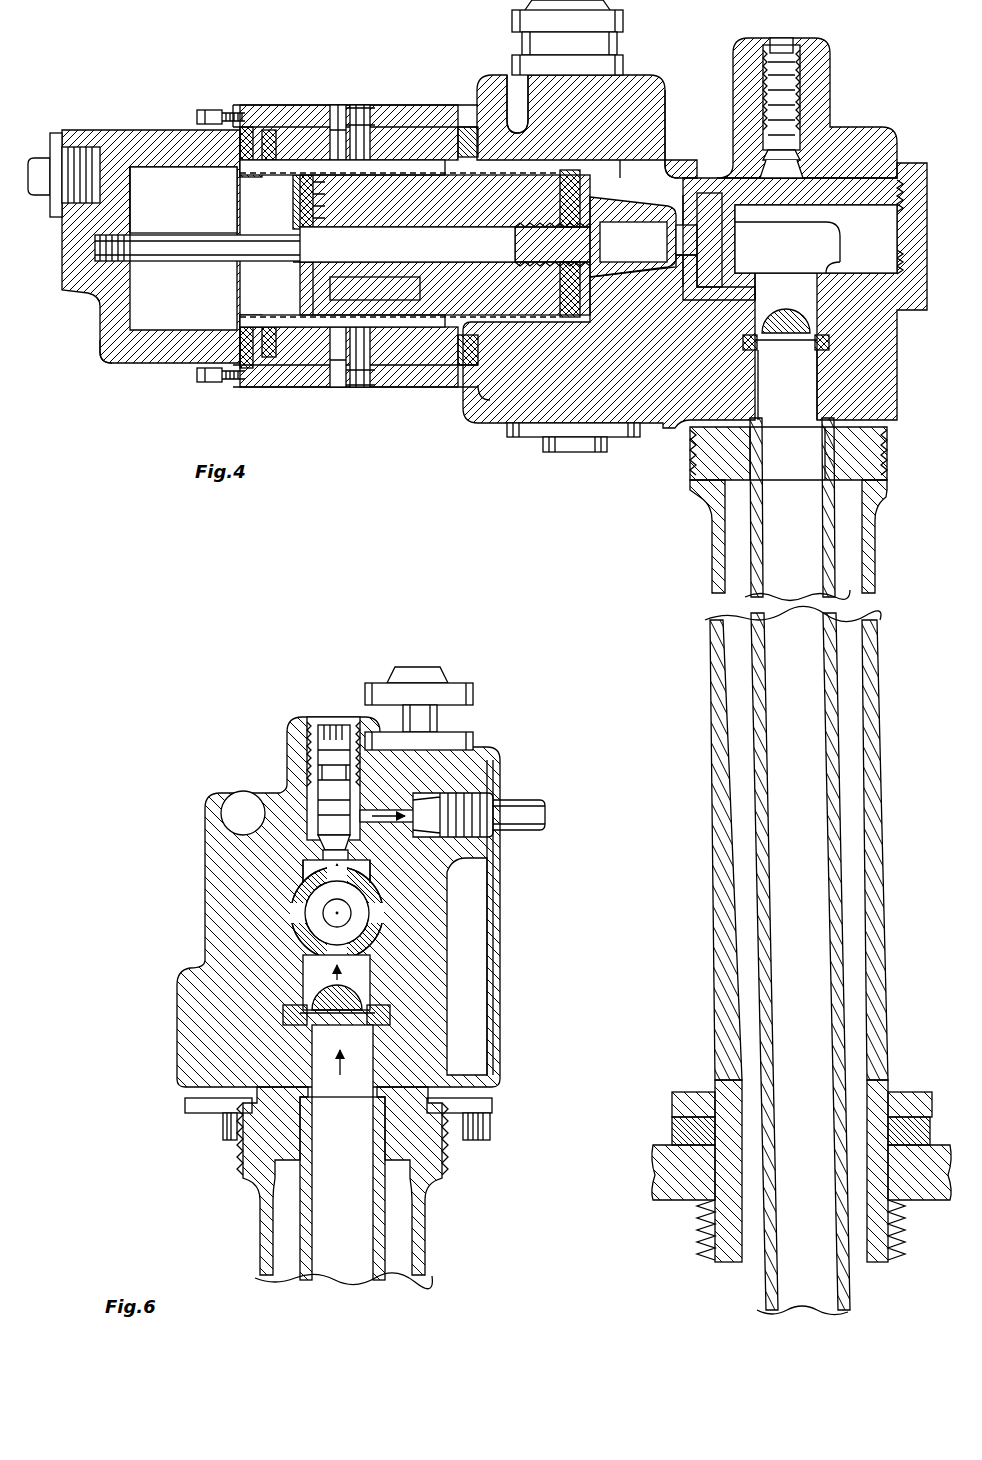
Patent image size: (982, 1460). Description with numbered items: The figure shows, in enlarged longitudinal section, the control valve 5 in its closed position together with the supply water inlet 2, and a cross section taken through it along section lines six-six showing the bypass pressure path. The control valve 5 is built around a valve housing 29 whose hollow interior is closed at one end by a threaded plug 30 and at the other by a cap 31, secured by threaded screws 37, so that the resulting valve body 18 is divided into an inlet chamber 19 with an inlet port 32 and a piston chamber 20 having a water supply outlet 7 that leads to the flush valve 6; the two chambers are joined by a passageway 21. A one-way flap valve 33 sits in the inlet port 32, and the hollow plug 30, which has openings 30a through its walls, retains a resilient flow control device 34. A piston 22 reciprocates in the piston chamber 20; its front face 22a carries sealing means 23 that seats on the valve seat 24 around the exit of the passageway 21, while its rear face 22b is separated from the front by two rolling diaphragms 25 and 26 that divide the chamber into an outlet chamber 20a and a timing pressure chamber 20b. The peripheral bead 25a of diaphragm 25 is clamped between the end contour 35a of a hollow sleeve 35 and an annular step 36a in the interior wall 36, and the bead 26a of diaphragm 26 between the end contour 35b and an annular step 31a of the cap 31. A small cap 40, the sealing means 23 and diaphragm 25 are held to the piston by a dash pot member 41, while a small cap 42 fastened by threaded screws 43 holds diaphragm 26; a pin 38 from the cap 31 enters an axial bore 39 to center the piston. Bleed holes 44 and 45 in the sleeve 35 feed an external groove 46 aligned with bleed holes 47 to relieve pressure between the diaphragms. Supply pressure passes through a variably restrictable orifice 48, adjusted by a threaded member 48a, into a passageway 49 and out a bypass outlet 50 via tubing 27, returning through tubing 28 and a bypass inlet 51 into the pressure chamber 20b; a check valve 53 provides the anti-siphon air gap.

In FIG. 4, the supply water inlet 2 is at (840, 850).
In FIG. 6, the supply water inlet 2 is at (415, 1248).
In FIG. 4, the control valve 5 is at (391, 72).
In FIG. 6, the control valve 5 is at (512, 930).
In FIG. 4, the flush valve 6 is at (783, 50).
In FIG. 4, the water supply outlet 7 is at (575, 468).
In FIG. 4, the valve body 18 is at (432, 104).
In FIG. 4, the inlet chamber 19 is at (816, 239).
In FIG. 6, the inlet chamber 19 is at (325, 925).
In FIG. 4, the piston chamber 20 is at (105, 310).
In FIG. 4, the outlet chamber 20a is at (595, 312).
In FIG. 4, the timing pressure chamber 20b is at (183, 200).
In FIG. 4, the passageway 21 is at (685, 200).
In FIG. 4, the piston 22 is at (415, 245).
In FIG. 4, the front face 22a is at (600, 246).
In FIG. 4, the rear face 22b is at (300, 272).
In FIG. 4, the sealing means 23 is at (600, 195).
In FIG. 4, the valve seat 24 is at (663, 148).
In FIG. 4, the rolling diaphragm 25 is at (570, 160).
In FIG. 4, the peripheral bead 25a is at (516, 128).
In FIG. 4, the rolling diaphragm 26 is at (292, 178).
In FIG. 4, the bead 26a is at (245, 165).
In FIG. 6, the tubing 27 is at (520, 812).
In FIG. 4, the tubing 28 is at (42, 158).
In FIG. 4, the valve housing 29 is at (252, 110).
In FIG. 4, the plug 30 is at (922, 195).
In FIG. 4, the openings 30a is at (838, 250).
In FIG. 6, the openings 30a is at (385, 920).
In FIG. 4, the cap 31 is at (128, 362).
In FIG. 4, the annular step 31a is at (218, 112).
In FIG. 4, the inlet port 32 is at (788, 433).
In FIG. 6, the inlet port 32 is at (342, 1061).
In FIG. 4, the one-way flap valve 33 is at (780, 312).
In FIG. 6, the one-way flap valve 33 is at (345, 990).
In FIG. 4, the flow control device 34 is at (700, 205).
In FIG. 4, the sleeve 35 is at (410, 130).
In FIG. 4, the end contour 35a is at (465, 130).
In FIG. 4, the end contour 35b is at (268, 130).
In FIG. 4, the interior wall 36 is at (168, 170).
In FIG. 4, the annular step 36a is at (485, 410).
In FIG. 4, the threaded screws 37 is at (195, 378).
In FIG. 4, the pin 38 is at (175, 255).
In FIG. 4, the axial bore 39 is at (407, 244).
In FIG. 4, the small cap 40 is at (578, 172).
In FIG. 4, the dash pot member 41 is at (672, 190).
In FIG. 4, the small cap 42 is at (330, 290).
In FIG. 4, the threaded screws 43 is at (292, 212).
In FIG. 4, the bleed hole 44 is at (388, 360).
In FIG. 4, the bleed hole 45 is at (365, 125).
In FIG. 4, the external circumferential groove 46 is at (336, 118).
In FIG. 4, the bleed holes 47 is at (352, 115).
In FIG. 4, the variably restrictable orifice 48 is at (805, 145).
In FIG. 6, the variably restrictable orifice 48 is at (305, 782).
In FIG. 4, the threaded member 48a is at (798, 115).
In FIG. 6, the threaded member 48a is at (315, 760).
In FIG. 6, the passageway 49 is at (447, 848).
In FIG. 6, the bypass outlet 50 is at (478, 770).
In FIG. 4, the bypass inlet 51 is at (100, 150).
In FIG. 4, the check valve 53 is at (622, 20).
In FIG. 6, the check valve 53 is at (480, 705).